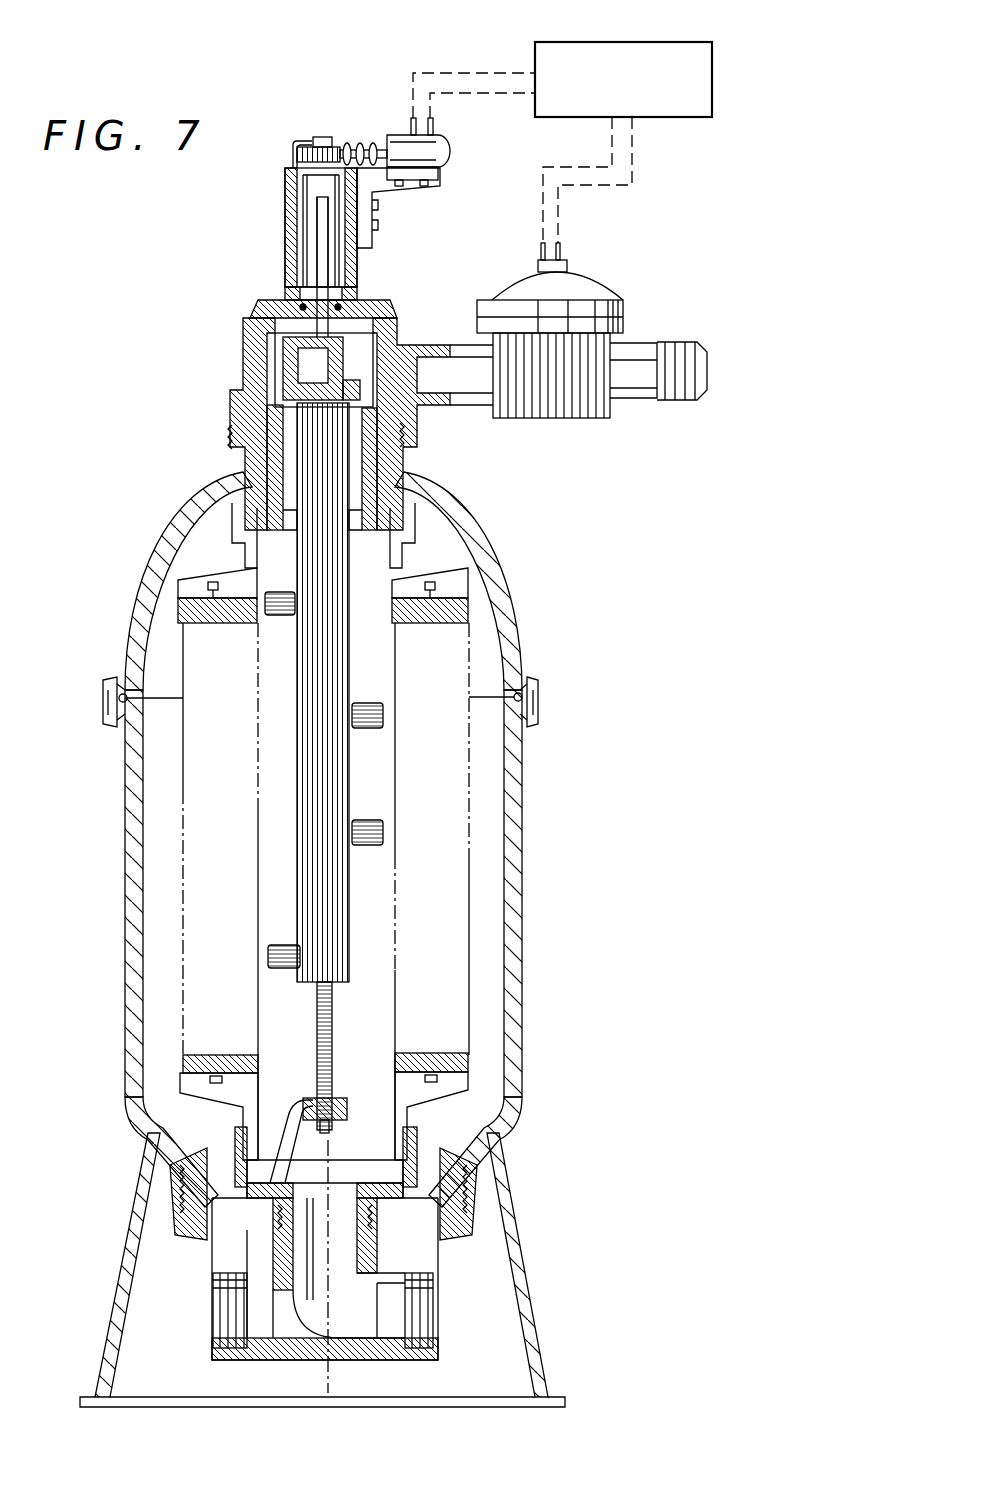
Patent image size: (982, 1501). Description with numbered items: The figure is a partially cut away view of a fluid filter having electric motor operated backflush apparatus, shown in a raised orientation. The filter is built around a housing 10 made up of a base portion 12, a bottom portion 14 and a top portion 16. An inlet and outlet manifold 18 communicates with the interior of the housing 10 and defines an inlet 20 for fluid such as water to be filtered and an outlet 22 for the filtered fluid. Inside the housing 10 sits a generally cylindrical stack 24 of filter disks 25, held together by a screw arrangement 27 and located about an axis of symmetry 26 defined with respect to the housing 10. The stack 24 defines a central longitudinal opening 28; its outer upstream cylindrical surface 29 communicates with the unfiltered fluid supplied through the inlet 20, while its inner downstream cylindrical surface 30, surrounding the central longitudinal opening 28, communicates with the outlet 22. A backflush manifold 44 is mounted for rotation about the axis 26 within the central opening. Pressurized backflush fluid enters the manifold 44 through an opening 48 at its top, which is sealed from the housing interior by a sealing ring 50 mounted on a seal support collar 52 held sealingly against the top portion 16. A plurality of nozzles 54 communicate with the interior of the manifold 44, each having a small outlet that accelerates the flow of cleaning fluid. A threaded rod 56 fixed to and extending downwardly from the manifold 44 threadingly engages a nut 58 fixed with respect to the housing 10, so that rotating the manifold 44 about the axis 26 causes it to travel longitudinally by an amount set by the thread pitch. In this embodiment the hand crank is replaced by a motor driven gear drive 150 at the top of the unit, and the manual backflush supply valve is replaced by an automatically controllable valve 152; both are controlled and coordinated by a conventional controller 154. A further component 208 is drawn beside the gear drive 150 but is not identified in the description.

The housing 10 is at (538, 823).
The base portion 12 is at (523, 1212).
The bottom portion 14 is at (527, 947).
The top portion 16 is at (503, 593).
The inlet and outlet manifold 18 is at (213, 1298).
The inlet 20 is at (215, 1332).
The outlet 22 is at (420, 1315).
The stack of filter disks 24 is at (477, 652).
The filter disks 25 is at (183, 1060).
The axis of symmetry 26 is at (328, 1373).
The screw arrangement 27 is at (207, 578).
The central longitudinal opening 28 is at (358, 1033).
The upstream cylindrical surface 29 is at (470, 1012).
The downstream cylindrical surface 30 is at (262, 823).
The manifold 44 is at (350, 573).
The opening 48 is at (313, 373).
The sealing ring 50 is at (280, 500).
The seal support collar 52 is at (375, 470).
The nozzles 54 is at (383, 708).
The threaded rod 56 is at (318, 1017).
The nut 58 is at (345, 1100).
The motor driven gear drive 150 is at (368, 147).
The automatically controllable valve 152 is at (627, 307).
The controller 154 is at (613, 40).
The solenoid 208 is at (448, 152).